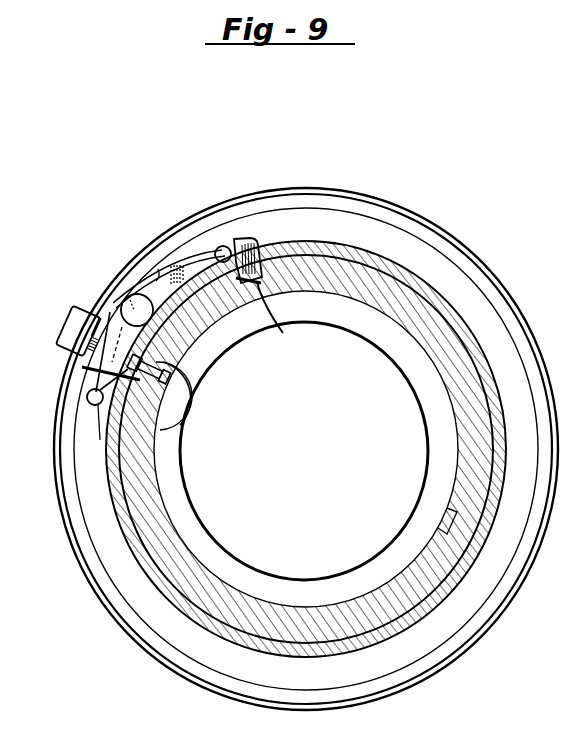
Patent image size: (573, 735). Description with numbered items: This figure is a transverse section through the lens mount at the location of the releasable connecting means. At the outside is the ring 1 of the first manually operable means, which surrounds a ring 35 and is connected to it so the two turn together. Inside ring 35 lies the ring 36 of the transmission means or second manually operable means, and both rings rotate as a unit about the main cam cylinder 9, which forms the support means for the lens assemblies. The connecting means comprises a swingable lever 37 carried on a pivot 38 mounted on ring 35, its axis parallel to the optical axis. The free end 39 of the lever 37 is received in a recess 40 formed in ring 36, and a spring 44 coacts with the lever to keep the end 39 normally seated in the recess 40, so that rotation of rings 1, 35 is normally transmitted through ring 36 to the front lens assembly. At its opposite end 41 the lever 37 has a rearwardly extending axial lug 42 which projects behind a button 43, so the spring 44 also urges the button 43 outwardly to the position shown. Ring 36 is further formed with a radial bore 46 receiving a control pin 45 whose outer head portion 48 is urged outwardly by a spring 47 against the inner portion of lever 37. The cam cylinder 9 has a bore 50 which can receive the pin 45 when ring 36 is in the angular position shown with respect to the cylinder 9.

The ring 1 is at (386, 208).
The main cam cylinder 9 is at (357, 331).
The ring 35 is at (292, 248).
The ring 36 is at (418, 338).
The swingable lever 37 is at (158, 269).
The pivot 38 is at (122, 297).
The free end 39 is at (237, 237).
The recess 40 is at (283, 333).
The end 41 is at (72, 379).
The axial lug 42 is at (82, 366).
The button 43 is at (67, 319).
The spring 44 is at (188, 238).
The pin 45 is at (183, 428).
The radial bore 46 is at (180, 358).
The spring 47 is at (165, 374).
The outer head portion 48 is at (100, 440).
The bore 50 is at (172, 382).